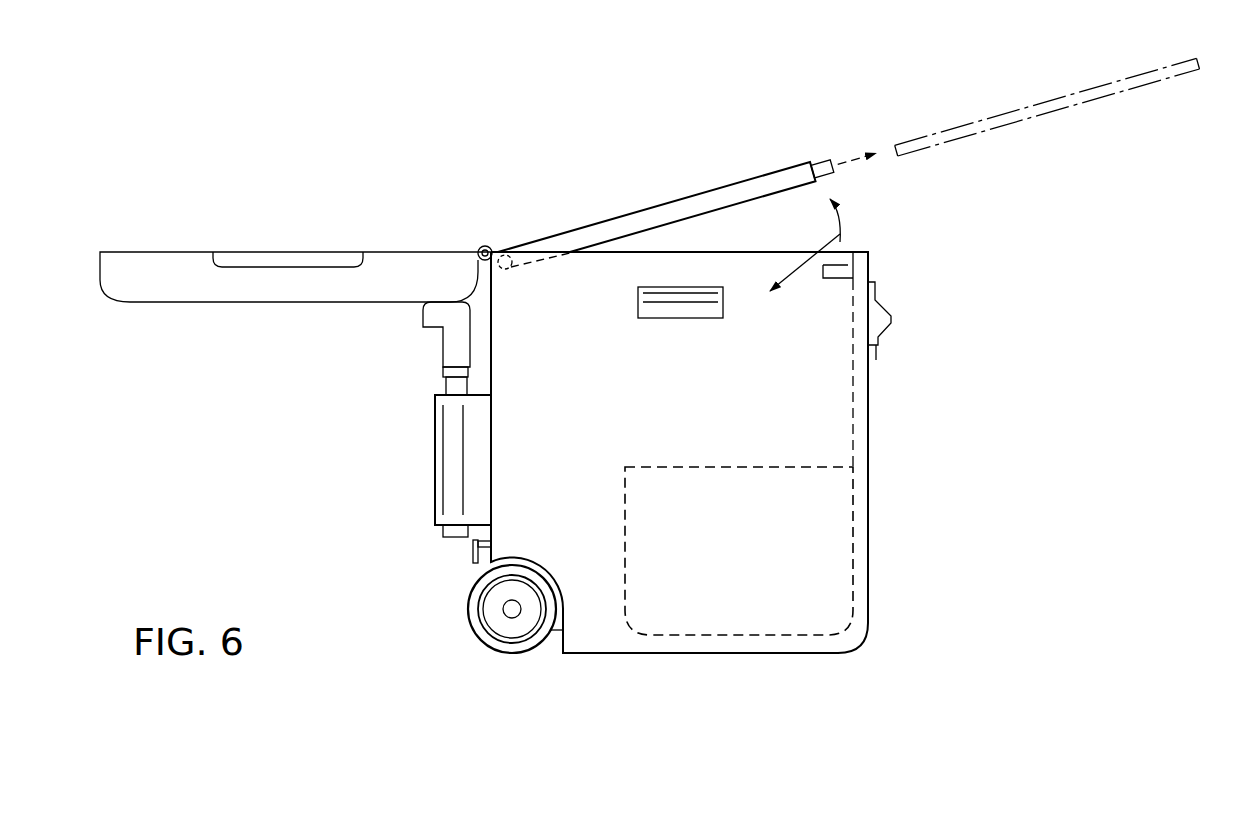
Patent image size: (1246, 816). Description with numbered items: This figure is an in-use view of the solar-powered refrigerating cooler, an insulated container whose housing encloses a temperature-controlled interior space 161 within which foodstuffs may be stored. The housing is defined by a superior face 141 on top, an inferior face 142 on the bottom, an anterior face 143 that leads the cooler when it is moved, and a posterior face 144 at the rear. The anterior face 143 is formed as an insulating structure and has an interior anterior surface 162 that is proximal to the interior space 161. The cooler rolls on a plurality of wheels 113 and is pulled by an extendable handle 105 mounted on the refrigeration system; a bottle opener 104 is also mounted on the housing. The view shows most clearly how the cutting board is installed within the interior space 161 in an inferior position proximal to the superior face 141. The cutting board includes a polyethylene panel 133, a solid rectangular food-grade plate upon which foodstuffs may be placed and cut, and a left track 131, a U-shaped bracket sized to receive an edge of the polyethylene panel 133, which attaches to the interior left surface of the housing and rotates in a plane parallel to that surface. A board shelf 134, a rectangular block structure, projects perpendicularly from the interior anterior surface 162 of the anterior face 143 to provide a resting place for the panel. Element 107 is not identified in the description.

The bottle opener 104 is at (892, 312).
The extendable handle 105 is at (450, 428).
The control panel 107 is at (695, 305).
The plurality of wheels 113 is at (522, 622).
The left track 131 is at (718, 200).
The polyethylene panel 133 is at (823, 158).
The board shelf 134 is at (832, 280).
The superior face 141 is at (276, 302).
The inferior face 142 is at (710, 653).
The anterior face 143 is at (868, 438).
The posterior face 144 is at (490, 353).
The interior space 161 is at (840, 232).
The interior anterior surface 162 is at (840, 412).